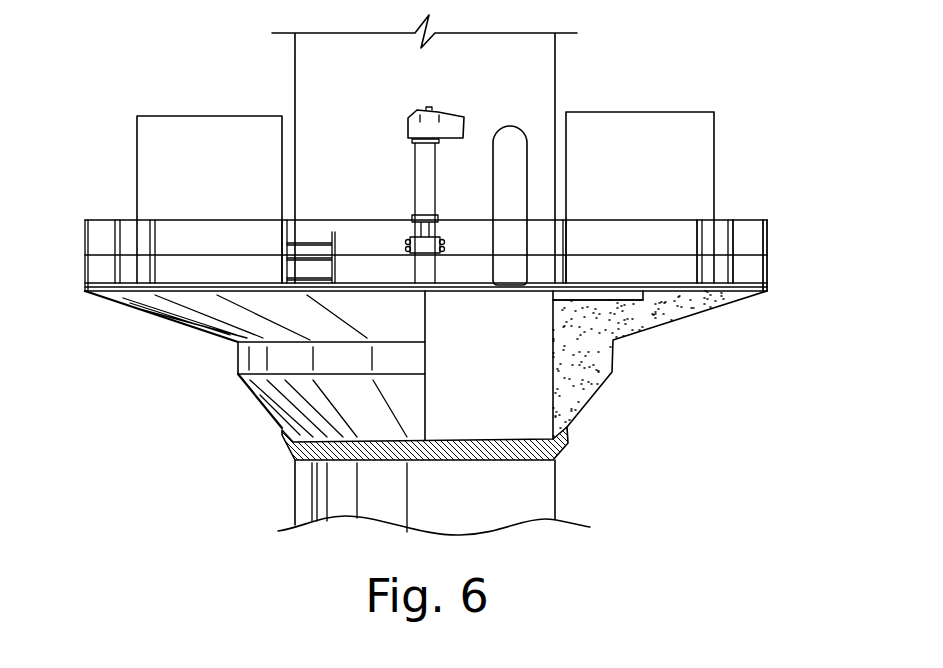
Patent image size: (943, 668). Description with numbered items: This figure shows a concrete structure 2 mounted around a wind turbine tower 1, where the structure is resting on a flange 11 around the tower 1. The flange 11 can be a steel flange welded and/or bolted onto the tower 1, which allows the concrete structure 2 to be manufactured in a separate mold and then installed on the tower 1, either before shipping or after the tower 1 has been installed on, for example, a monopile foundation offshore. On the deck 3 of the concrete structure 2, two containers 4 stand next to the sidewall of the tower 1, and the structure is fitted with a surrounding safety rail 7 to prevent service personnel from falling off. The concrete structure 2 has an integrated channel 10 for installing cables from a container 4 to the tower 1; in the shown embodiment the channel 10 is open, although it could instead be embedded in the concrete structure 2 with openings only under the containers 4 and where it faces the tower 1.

The wind turbine tower 1 is at (545, 485).
The concrete structure 2 is at (587, 385).
The deck 3 is at (105, 280).
The container 4 is at (207, 135).
The safety rail 7 is at (767, 235).
The channel 10 is at (645, 294).
The flange 11 is at (290, 450).